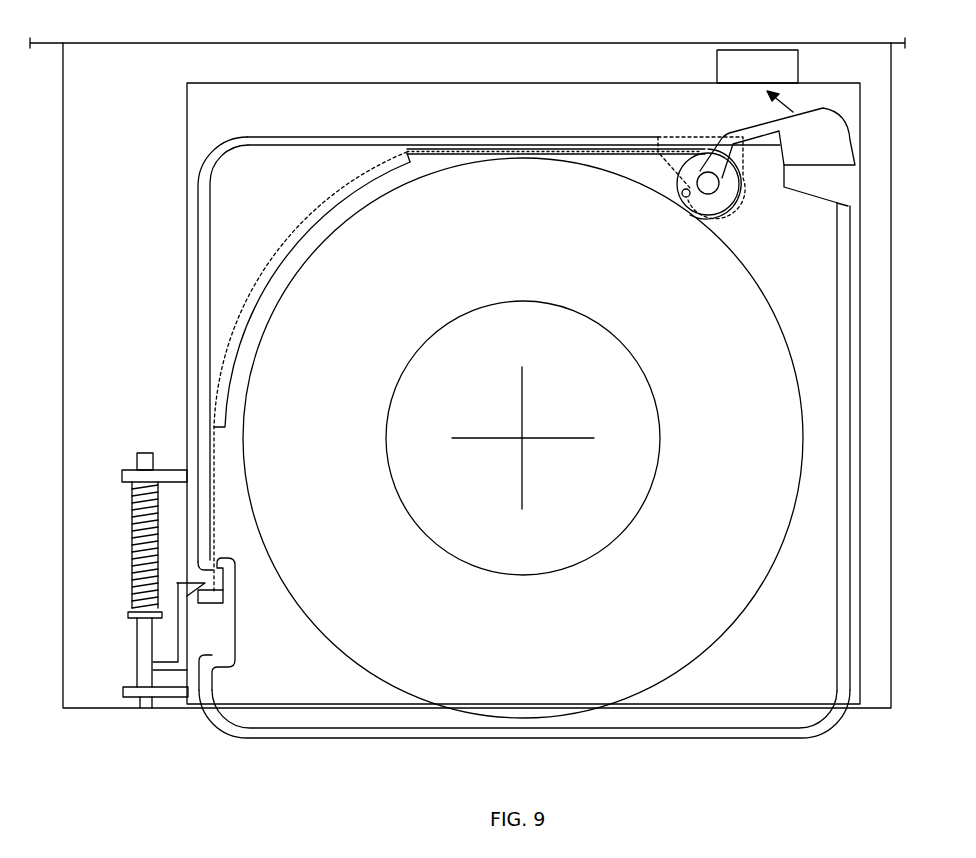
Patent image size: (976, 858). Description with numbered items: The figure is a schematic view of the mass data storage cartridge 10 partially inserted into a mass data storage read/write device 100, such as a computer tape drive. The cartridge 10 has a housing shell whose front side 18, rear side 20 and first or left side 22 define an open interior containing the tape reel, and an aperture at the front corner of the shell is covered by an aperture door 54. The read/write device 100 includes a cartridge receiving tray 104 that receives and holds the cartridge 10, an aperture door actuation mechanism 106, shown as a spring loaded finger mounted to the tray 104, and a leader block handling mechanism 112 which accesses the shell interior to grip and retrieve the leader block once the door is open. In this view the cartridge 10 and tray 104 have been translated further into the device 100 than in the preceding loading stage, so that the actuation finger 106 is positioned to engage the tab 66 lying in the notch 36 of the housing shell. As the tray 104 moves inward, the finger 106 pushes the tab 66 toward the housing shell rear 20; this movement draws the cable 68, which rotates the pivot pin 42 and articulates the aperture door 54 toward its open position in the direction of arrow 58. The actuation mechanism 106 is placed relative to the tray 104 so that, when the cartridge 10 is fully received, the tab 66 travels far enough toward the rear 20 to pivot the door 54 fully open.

The mass data storage read/write device 100 is at (58, 155).
The cartridge receiving tray 104 is at (612, 90).
The leader block handling mechanism 112 is at (800, 68).
The arrow 58 is at (791, 97).
The aperture door 54 is at (773, 124).
The pivot pin 42 is at (682, 192).
The front side 18 is at (388, 137).
The first side 22 is at (198, 253).
The rear side 20 is at (306, 740).
The cable 68 is at (512, 150).
The cartridge 10 is at (222, 200).
The tab 66 is at (218, 599).
The notch 36 is at (236, 632).
The aperture door actuation mechanism 106 is at (127, 653).